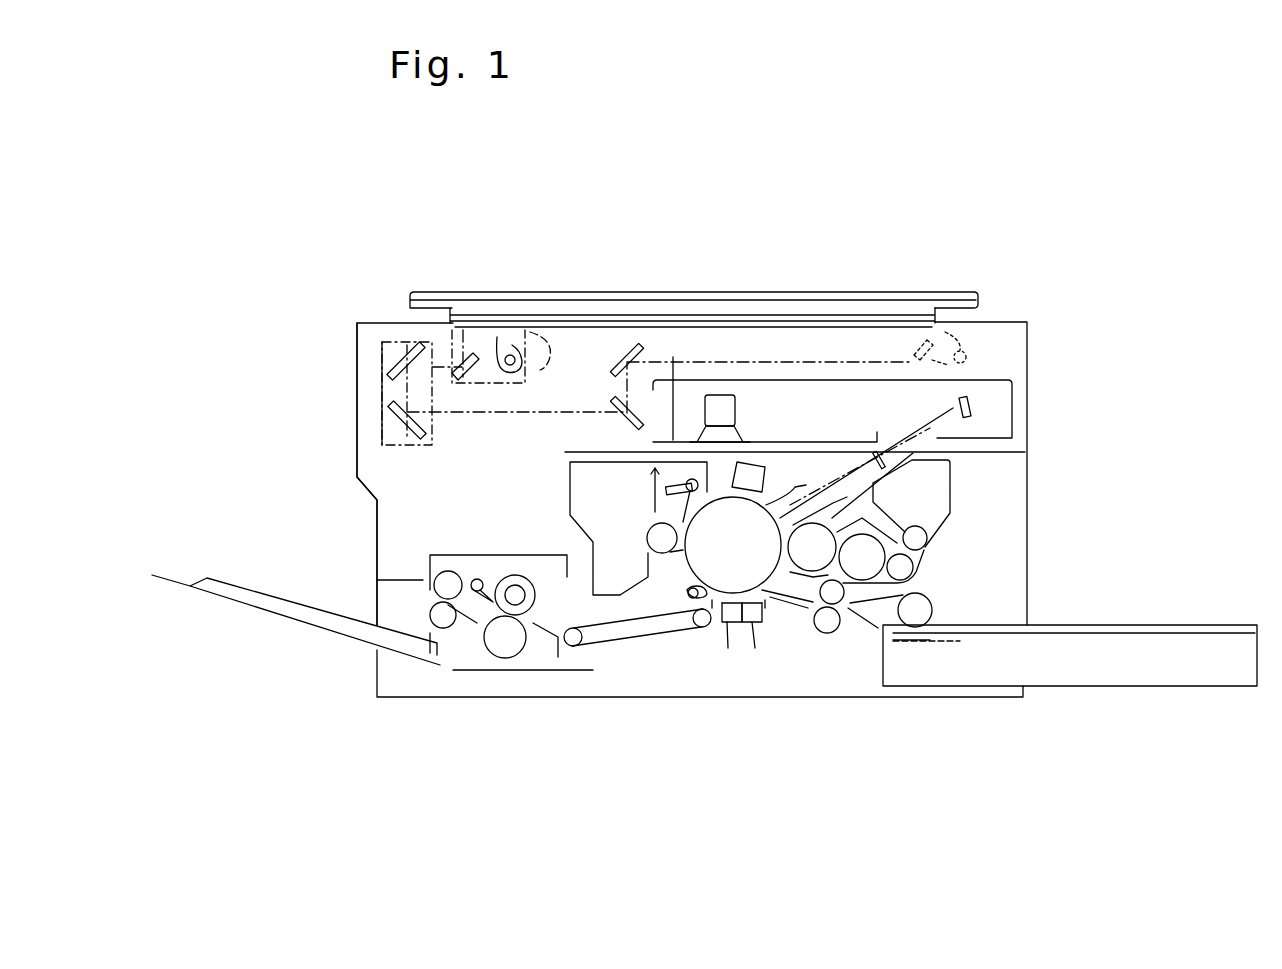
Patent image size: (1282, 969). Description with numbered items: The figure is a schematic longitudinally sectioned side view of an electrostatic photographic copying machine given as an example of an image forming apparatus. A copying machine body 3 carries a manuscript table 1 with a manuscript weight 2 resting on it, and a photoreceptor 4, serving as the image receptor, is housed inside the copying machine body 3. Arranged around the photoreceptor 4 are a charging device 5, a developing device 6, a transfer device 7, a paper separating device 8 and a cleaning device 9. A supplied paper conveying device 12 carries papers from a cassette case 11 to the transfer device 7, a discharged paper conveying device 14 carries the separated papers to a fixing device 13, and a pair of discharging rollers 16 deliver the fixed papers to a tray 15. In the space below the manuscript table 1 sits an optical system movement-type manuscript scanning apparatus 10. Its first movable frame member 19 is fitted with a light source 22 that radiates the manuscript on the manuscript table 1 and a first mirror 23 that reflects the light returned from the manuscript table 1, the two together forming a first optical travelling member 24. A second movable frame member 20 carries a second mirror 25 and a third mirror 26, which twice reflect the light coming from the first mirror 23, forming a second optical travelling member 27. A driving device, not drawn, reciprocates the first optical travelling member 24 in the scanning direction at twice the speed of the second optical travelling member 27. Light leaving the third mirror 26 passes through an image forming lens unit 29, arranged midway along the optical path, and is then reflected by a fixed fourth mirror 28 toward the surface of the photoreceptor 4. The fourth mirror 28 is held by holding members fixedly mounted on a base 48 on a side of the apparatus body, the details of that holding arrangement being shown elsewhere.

The manuscript table 1 is at (756, 319).
The manuscript weight 2 is at (838, 292).
The copying machine body 3 is at (1028, 345).
The photoreceptor 4 is at (753, 523).
The charging device 5 is at (758, 462).
The developing device 6 is at (918, 573).
The transfer device 7 is at (755, 648).
The paper separating device 8 is at (728, 648).
The cleaning device 9 is at (567, 507).
The manuscript scanning apparatus 10 is at (393, 475).
The cassette case 11 is at (1135, 688).
The supplied paper conveying device 12 is at (828, 640).
The fixing device 13 is at (493, 658).
The discharged paper conveying device 14 is at (630, 640).
The tray 15 is at (313, 632).
The discharging rollers 16 is at (449, 636).
The first movable frame member 19 is at (541, 308).
The second movable frame member 20 is at (382, 396).
The light source 22 is at (499, 352).
The first mirror 23 is at (477, 357).
The first optical travelling member 24 is at (496, 292).
The second mirror 25 is at (396, 355).
The third mirror 26 is at (362, 427).
The second optical travelling member 27 is at (330, 375).
The fourth mirror 28 is at (970, 405).
The image forming lens unit 29 is at (721, 395).
The base 48 is at (673, 357).